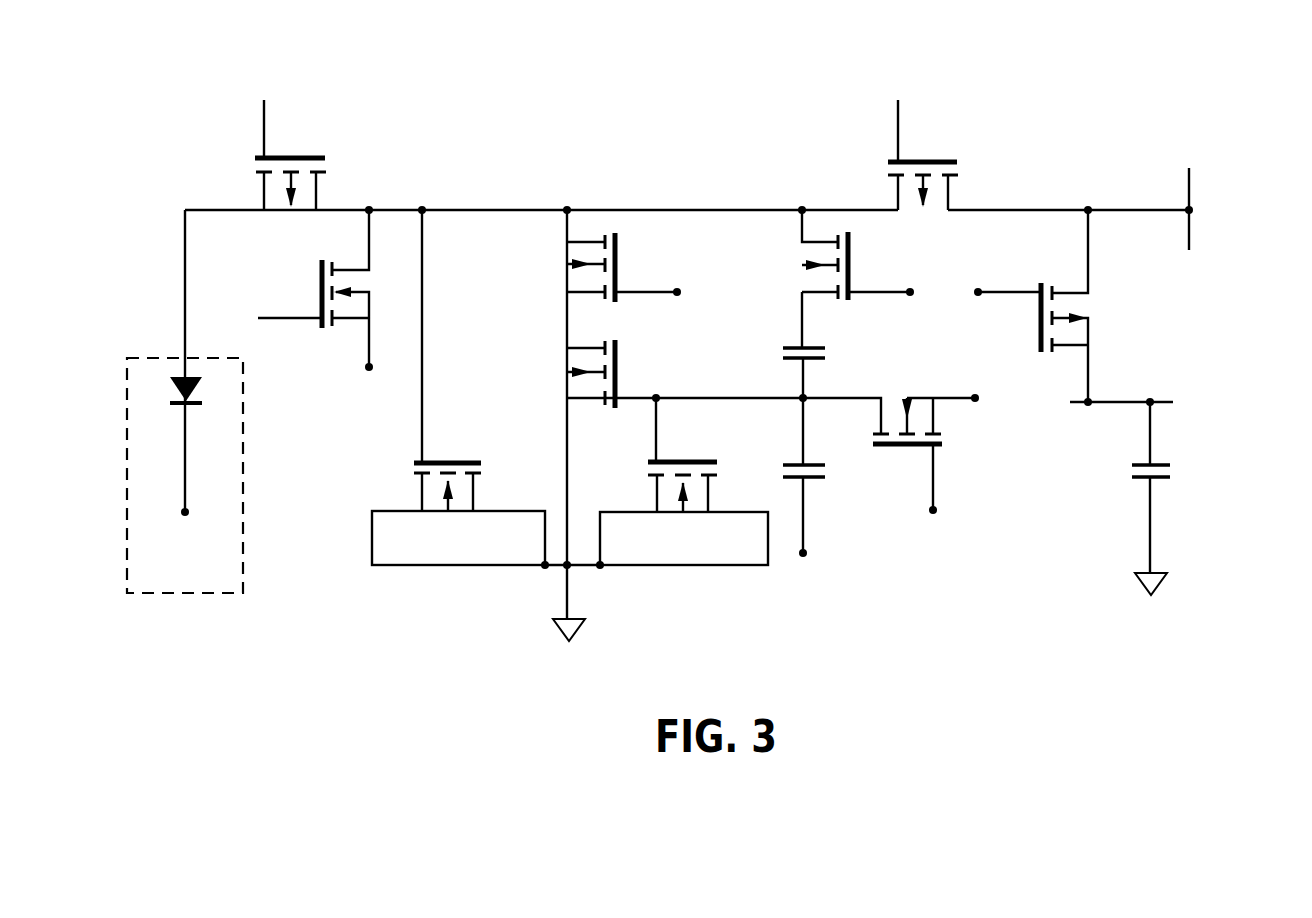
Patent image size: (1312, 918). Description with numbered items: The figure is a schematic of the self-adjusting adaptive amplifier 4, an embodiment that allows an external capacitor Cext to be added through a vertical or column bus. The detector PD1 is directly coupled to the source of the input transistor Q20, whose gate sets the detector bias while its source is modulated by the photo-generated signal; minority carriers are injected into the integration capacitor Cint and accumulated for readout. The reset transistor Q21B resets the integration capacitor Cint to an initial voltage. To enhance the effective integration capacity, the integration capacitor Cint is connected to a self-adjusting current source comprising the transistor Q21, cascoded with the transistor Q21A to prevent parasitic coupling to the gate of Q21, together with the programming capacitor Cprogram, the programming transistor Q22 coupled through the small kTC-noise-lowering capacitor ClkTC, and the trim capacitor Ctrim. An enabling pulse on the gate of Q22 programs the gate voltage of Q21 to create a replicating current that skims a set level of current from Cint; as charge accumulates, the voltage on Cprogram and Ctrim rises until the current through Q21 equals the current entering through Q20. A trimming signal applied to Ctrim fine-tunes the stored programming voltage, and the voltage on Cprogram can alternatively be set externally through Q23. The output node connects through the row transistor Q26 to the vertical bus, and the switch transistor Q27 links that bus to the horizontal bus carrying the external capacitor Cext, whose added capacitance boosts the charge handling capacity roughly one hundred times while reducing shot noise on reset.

The amplifier 4 is at (738, 102).
The input transistor Q20 is at (290, 165).
The reset transistor Q21B is at (310, 290).
The cascode transistor Q21A is at (628, 267).
The current source transistor Q21 is at (685, 374).
The programming transistor Q22 is at (858, 255).
The external programming transistor Q23 is at (891, 454).
The row select transistor Q26 is at (951, 155).
The external capacitor switch transistor Q27 is at (1060, 306).
The detector PD1 is at (243, 468).
The integration capacitor Cint is at (458, 387).
The programming capacitor Cprogram is at (684, 481).
The kTC-noise-lowering capacitor ClkTC is at (765, 345).
The trim capacitor Ctrim is at (780, 477).
The external capacitor Cext is at (1116, 498).